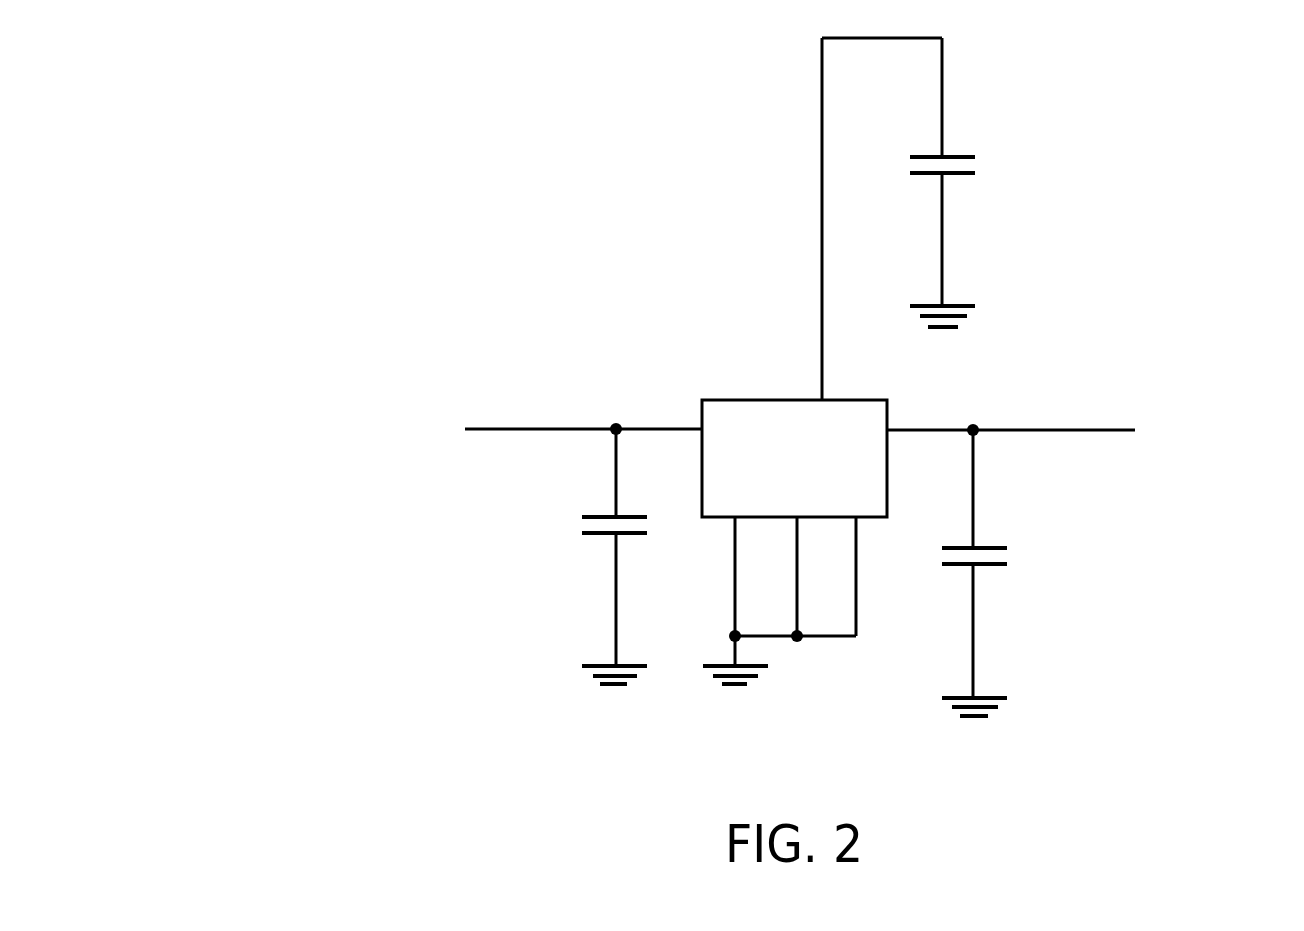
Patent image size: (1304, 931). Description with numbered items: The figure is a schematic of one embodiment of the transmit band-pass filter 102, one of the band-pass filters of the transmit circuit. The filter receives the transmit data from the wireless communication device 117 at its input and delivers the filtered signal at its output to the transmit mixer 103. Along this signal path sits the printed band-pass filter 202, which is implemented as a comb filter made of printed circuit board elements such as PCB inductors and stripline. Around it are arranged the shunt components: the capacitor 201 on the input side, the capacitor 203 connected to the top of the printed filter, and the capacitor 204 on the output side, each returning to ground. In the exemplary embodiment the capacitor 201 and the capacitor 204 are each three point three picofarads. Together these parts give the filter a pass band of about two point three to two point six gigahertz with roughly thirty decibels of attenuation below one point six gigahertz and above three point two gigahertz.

The transmit band-pass filter 102 is at (611, 203).
The wireless communication device 117 is at (376, 393).
The transmit mixer 103 is at (1087, 411).
The capacitor 201 is at (577, 553).
The printed band-pass filter 202 is at (794, 361).
The capacitor 203 is at (937, 182).
The capacitor 204 is at (1013, 570).